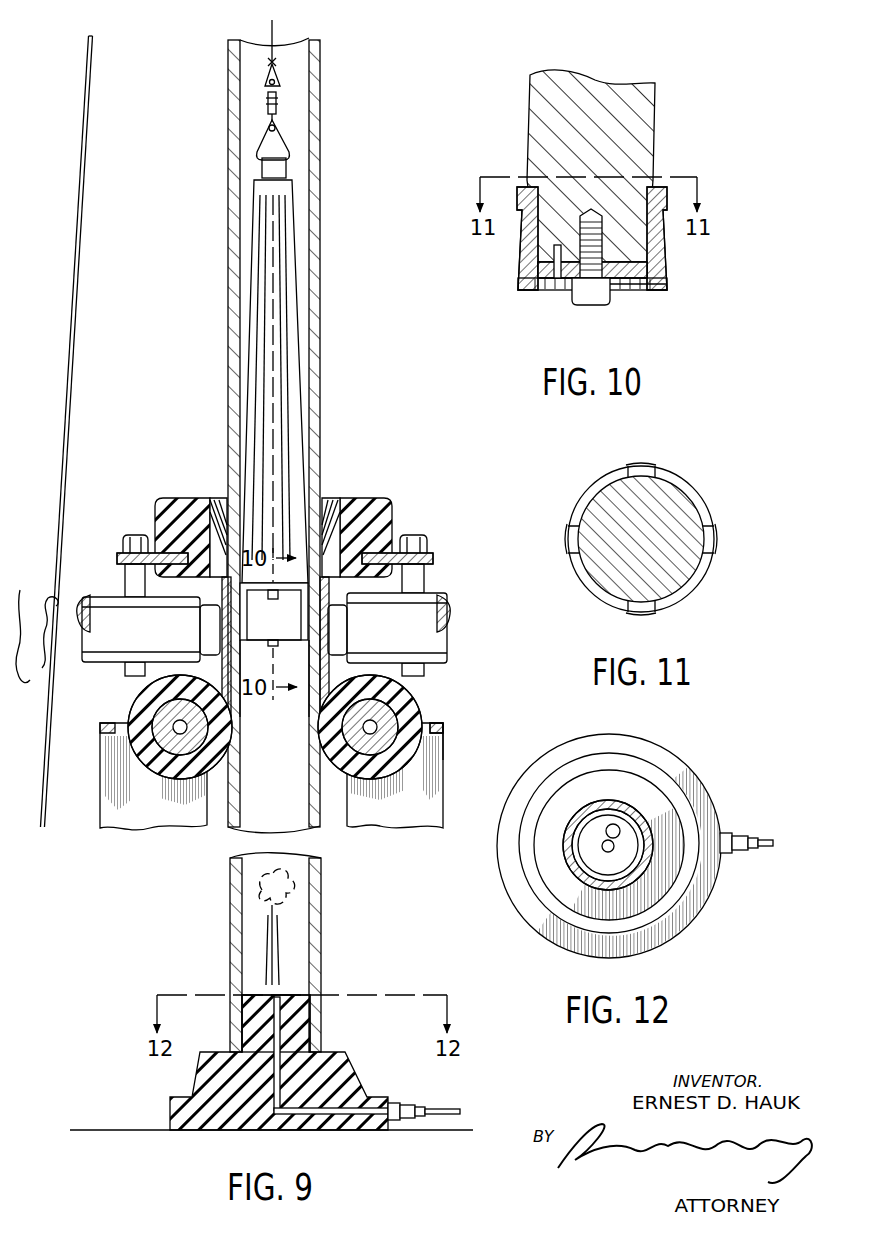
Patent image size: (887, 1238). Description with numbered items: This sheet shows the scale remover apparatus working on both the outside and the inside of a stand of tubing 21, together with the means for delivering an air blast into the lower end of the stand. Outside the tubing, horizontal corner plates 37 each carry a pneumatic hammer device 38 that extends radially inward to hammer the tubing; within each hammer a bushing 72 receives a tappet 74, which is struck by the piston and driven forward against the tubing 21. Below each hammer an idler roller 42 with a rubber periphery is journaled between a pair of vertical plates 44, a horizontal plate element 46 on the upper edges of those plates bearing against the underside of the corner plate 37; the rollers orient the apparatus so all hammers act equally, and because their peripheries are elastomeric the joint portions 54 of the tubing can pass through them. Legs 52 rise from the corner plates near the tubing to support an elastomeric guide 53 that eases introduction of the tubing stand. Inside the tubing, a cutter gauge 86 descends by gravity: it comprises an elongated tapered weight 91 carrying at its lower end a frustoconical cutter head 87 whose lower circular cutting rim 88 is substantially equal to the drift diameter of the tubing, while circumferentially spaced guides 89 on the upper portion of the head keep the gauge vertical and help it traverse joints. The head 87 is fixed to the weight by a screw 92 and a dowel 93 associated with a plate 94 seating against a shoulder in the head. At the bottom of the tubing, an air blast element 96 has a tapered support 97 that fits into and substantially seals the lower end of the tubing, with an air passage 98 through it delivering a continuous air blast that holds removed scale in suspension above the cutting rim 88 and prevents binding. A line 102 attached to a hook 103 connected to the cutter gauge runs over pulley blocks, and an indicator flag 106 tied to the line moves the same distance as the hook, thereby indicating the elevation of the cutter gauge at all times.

In FIG. 9, the tubing 21 is at (319, 396).
In FIG. 12, the tubing 21 is at (646, 816).
In FIG. 9, the corner plate 37 is at (436, 724).
In FIG. 9, the pneumatic hammer device 38 is at (97, 591).
In FIG. 9, the upper idler roller 42 is at (150, 778).
In FIG. 9, the vertical plate 44 is at (178, 828).
In FIG. 9, the horizontal plate element 46 is at (442, 733).
In FIG. 9, the leg 52 is at (430, 575).
In FIG. 9, the guide 53 is at (392, 505).
In FIG. 9, the joint portion 54 is at (320, 688).
In FIG. 9, the bushing 72 is at (264, 628).
In FIG. 9, the tappet 74 is at (328, 612).
In FIG. 9, the cutter gauge 86 is at (312, 370).
In FIG. 10, the cutter gauge 86 is at (636, 157).
In FIG. 9, the cutter head 87 is at (274, 614).
In FIG. 10, the cutter head 87 is at (663, 250).
In FIG. 10, the cutting rim 88 is at (667, 288).
In FIG. 10, the guide 89 is at (522, 200).
In FIG. 11, the guide 89 is at (644, 466).
In FIG. 9, the tapered weight 91 is at (300, 300).
In FIG. 10, the tapered weight 91 is at (640, 93).
In FIG. 11, the tapered weight 91 is at (690, 510).
In FIG. 10, the screw 92 is at (598, 305).
In FIG. 10, the dowel 93 is at (558, 275).
In FIG. 10, the plate 94 is at (640, 288).
In FIG. 9, the air blast element 96 is at (368, 1065).
In FIG. 12, the air blast element 96 is at (700, 912).
In FIG. 9, the tapered support 97 is at (318, 1043).
In FIG. 12, the tapered support 97 is at (598, 868).
In FIG. 9, the air passage 98 is at (343, 1112).
In FIG. 12, the air passage 98 is at (768, 848).
In FIG. 9, the line 102 is at (276, 40).
In FIG. 9, the hook 103 is at (282, 118).
In FIG. 9, the indicator flag 106 is at (20, 620).